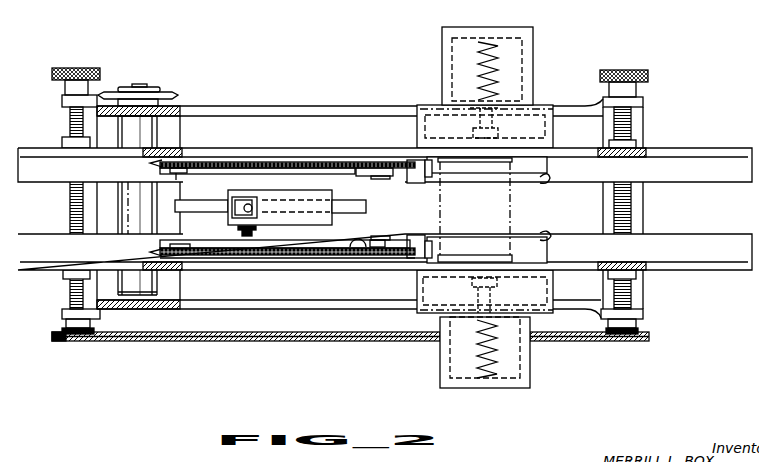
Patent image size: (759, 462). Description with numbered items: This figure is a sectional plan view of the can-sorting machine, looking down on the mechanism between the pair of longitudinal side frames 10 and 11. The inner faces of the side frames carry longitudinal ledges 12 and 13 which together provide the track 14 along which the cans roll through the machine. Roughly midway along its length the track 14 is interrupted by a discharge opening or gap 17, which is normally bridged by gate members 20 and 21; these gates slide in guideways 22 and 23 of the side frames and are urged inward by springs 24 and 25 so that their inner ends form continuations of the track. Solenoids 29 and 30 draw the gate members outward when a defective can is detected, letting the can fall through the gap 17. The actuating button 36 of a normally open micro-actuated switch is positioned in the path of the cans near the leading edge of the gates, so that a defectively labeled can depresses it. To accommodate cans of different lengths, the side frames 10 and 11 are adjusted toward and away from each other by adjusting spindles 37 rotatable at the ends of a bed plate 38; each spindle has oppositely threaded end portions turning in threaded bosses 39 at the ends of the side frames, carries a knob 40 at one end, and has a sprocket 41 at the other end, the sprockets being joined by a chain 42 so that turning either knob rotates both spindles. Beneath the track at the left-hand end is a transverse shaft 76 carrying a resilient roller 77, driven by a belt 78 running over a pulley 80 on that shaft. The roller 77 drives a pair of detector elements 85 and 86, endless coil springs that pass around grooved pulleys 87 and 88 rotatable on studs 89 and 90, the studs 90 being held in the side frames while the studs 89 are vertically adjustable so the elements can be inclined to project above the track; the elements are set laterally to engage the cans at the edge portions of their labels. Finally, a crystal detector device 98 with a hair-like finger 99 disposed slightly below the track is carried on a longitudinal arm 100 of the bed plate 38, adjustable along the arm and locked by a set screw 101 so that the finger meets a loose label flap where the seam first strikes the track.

The longitudinal side frame 10 is at (700, 272).
The longitudinal side frame 11 is at (706, 152).
The longitudinal ledge 12 is at (50, 234).
The longitudinal ledge 13 is at (30, 172).
The track 14 is at (722, 160).
The discharge opening or gap 17 is at (525, 246).
The gate member 20 is at (462, 252).
The gate member 21 is at (465, 168).
The guideway 22 is at (551, 236).
The guideway 23 is at (549, 180).
The spring 24 is at (480, 351).
The spring 25 is at (525, 46).
The solenoid 29 is at (452, 352).
The solenoid 30 is at (525, 62).
The actuating button 36 is at (422, 165).
The adjusting spindle 37 is at (68, 120).
The bed plate 38 is at (322, 301).
The boss 39 is at (68, 141).
The knob 40 is at (62, 75).
The sprocket 41 is at (80, 340).
The chain 42 is at (246, 341).
The transverse shaft 76 is at (138, 84).
The resilient roller 77 is at (157, 130).
The belt 78 is at (180, 100).
The pulley 80 is at (100, 98).
The detector element 85 is at (303, 256).
The detector element 86 is at (288, 162).
The grooved pulley 87 is at (184, 160).
The grooved pulley 88 is at (368, 170).
The stud 89 is at (176, 180).
The stud 90 is at (386, 179).
The detector device 98 is at (330, 226).
The finger 99 is at (243, 215).
The arm 100 is at (198, 210).
The set screw 101 is at (250, 230).